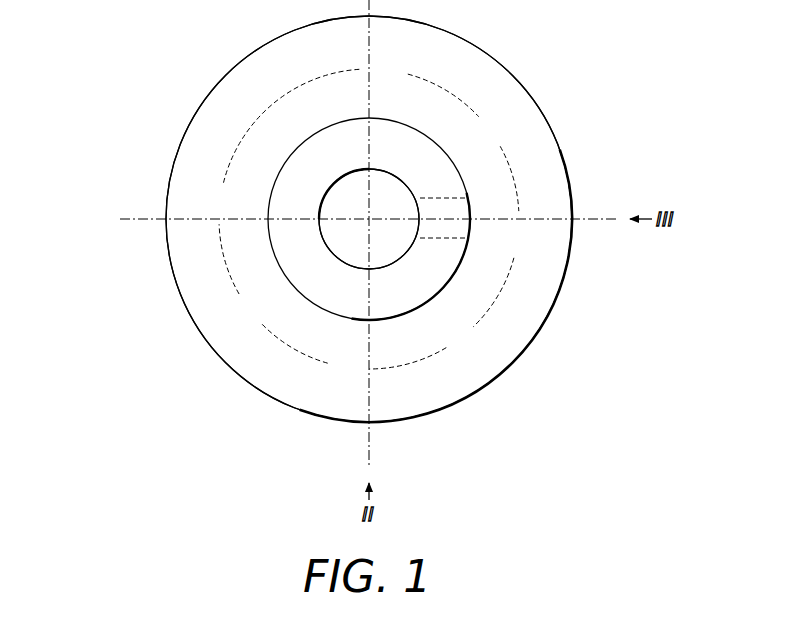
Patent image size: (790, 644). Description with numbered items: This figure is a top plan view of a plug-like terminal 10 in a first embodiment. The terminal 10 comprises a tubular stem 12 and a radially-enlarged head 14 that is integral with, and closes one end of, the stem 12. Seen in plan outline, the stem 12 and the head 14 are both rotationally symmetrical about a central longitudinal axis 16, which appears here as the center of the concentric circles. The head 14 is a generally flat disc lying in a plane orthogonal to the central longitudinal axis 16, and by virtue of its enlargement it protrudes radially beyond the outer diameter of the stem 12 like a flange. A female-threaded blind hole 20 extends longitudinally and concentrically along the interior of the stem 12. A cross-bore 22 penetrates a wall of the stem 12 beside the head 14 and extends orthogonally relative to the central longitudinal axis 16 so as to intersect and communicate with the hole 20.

The terminal 10 is at (112, 70).
The tubular stem 12 is at (313, 145).
The radially-enlarged head 14 is at (192, 298).
The central longitudinal axis 16 is at (369, 220).
The female-threaded blind hole 20 is at (402, 182).
The cross-bore 22 is at (475, 230).